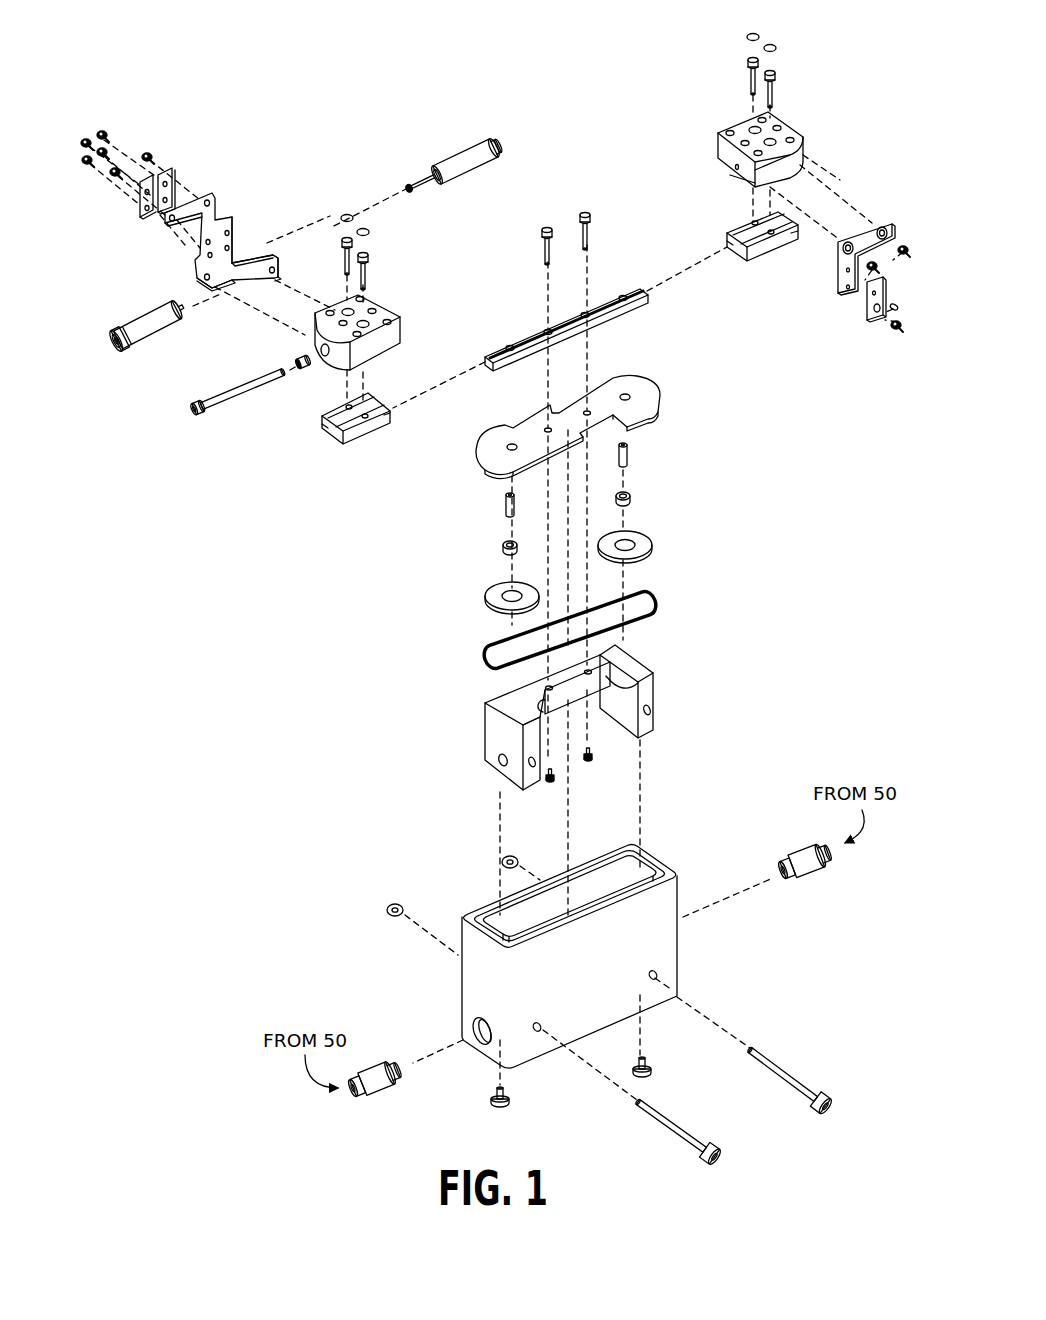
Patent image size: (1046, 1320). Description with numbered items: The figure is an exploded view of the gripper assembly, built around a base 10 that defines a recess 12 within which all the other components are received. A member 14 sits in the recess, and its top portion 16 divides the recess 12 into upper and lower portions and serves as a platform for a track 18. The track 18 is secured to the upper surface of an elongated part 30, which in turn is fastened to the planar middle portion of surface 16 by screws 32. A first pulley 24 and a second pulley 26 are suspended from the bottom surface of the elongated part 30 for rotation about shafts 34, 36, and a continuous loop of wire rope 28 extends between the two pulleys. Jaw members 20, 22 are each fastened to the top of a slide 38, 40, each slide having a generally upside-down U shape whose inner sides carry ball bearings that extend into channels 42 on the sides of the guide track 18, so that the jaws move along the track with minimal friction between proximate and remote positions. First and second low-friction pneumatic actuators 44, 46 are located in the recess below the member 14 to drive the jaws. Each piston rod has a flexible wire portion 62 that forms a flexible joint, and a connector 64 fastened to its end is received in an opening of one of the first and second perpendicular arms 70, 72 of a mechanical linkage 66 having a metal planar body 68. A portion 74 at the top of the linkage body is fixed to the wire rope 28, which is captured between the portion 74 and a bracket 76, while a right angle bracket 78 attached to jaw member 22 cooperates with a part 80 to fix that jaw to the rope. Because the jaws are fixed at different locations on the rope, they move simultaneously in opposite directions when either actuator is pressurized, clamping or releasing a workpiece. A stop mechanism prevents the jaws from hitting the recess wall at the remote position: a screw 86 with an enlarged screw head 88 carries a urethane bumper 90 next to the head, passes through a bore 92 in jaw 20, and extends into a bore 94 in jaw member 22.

The base 10 is at (679, 945).
The recess 12 is at (515, 905).
The member 14 is at (572, 717).
The top portion 16 is at (533, 687).
The track 18 is at (603, 301).
The jaw member 20 is at (380, 302).
The jaw member 22 is at (752, 138).
The first pulley 24 is at (488, 597).
The second pulley 26 is at (652, 545).
The wire rope 28 is at (652, 596).
The elongated part 30 is at (487, 452).
The screws 32 is at (550, 780).
The shaft 34 is at (505, 505).
The shaft 36 is at (628, 455).
The slide 38 is at (345, 446).
The slide 40 is at (775, 250).
The channels 42 is at (651, 298).
The first pneumatic actuator 44 is at (143, 325).
The second pneumatic actuator 46 is at (442, 171).
The flexible wire portion 62 is at (409, 187).
The connector 64 is at (412, 190).
The mechanical linkage 66 is at (205, 192).
The planar body 68 is at (238, 235).
The first arm 70 is at (198, 270).
The second arm 72 is at (283, 268).
The portion 74 is at (225, 192).
The bracket 76 is at (140, 212).
The right angle bracket 78 is at (904, 221).
The part 80 is at (887, 291).
The screw 86 is at (224, 417).
The screw head 88 is at (197, 414).
The bumper 90 is at (300, 368).
The bore 92 is at (328, 356).
The bore 94 is at (724, 150).